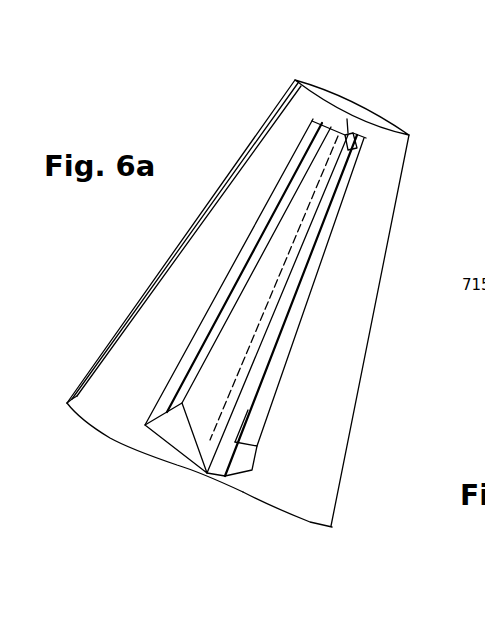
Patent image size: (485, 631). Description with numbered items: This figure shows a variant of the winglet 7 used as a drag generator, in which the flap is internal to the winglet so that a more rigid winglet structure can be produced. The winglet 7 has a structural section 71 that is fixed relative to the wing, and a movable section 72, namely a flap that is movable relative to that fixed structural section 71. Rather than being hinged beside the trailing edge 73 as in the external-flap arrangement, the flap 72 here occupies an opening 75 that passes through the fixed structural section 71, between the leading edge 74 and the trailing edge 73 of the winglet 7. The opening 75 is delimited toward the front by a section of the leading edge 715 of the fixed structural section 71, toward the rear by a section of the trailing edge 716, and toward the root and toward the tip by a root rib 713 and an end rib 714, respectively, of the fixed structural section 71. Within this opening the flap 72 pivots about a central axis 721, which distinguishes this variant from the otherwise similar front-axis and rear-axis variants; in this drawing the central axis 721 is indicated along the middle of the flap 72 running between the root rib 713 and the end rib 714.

The winglet 7 is at (172, 147).
The structural section 71 is at (143, 277).
The movable section 72 is at (200, 453).
The trailing edge 73 is at (368, 348).
The leading edge 74 is at (247, 137).
The opening 75 is at (326, 232).
The root rib 713 is at (237, 477).
The end rib 714 is at (330, 112).
The leading edge section 715 is at (130, 358).
The trailing edge section 716 is at (326, 441).
The central axis 721 is at (356, 125).